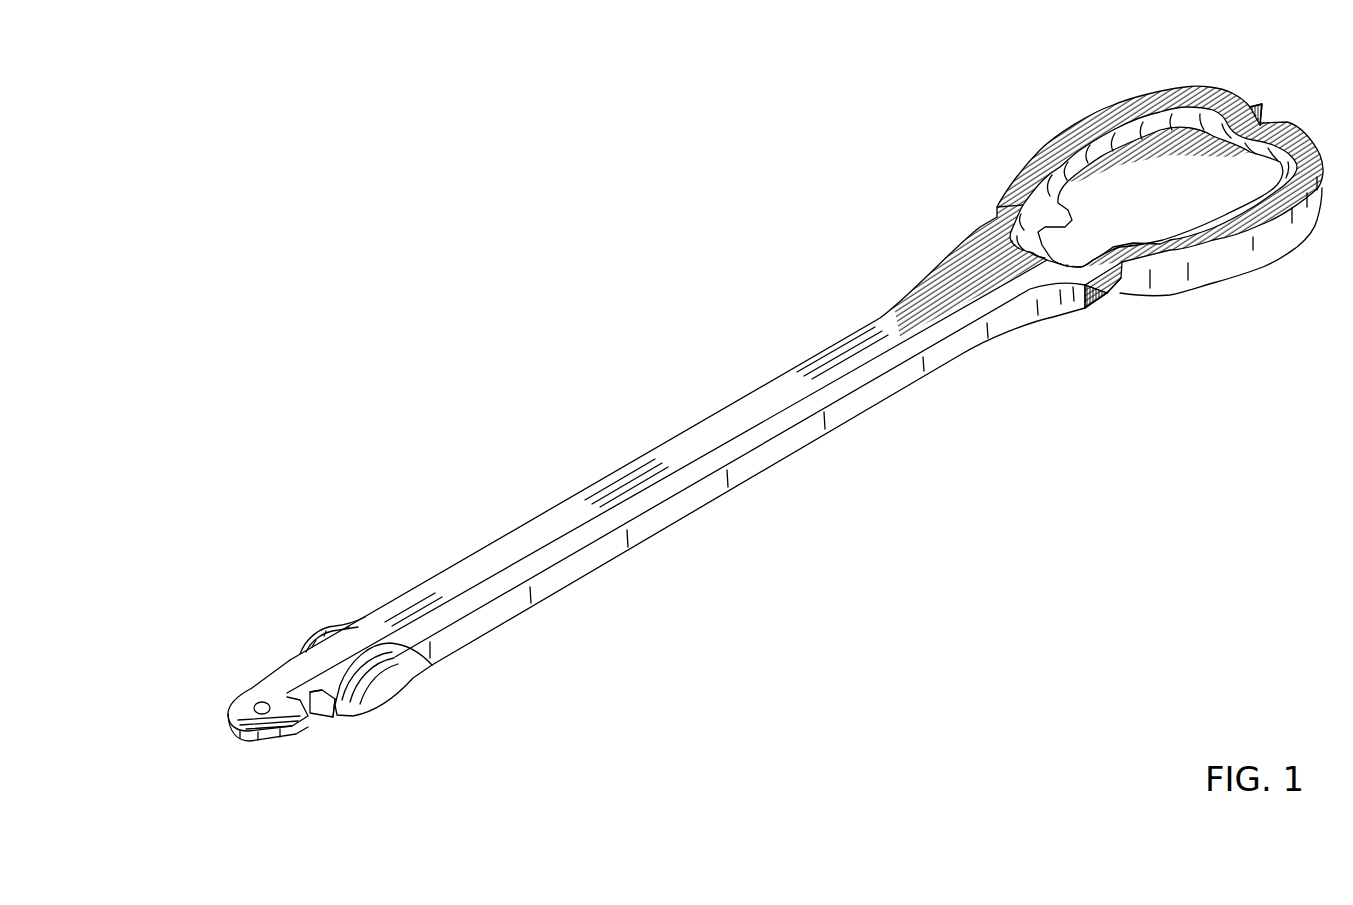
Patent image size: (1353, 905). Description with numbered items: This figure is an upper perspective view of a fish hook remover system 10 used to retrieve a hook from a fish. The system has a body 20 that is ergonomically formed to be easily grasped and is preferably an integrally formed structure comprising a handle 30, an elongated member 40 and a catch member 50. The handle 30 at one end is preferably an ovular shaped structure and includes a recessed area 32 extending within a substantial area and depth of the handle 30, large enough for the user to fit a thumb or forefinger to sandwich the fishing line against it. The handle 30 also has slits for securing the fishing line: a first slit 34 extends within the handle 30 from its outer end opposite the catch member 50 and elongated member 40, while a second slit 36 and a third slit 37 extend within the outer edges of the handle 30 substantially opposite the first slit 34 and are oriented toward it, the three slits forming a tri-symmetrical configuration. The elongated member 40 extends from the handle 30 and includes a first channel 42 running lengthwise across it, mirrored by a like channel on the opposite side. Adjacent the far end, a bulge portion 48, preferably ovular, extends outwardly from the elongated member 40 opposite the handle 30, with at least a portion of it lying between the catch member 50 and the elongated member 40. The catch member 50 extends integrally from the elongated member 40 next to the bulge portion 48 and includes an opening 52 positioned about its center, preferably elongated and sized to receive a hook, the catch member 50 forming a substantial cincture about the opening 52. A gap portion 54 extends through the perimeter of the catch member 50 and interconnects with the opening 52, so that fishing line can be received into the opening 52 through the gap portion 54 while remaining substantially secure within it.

The fish hook remover system 10 is at (342, 125).
The body 20 is at (687, 516).
The handle 30 is at (1207, 268).
The recessed area 32 is at (1097, 193).
The first slit 34 is at (1263, 125).
The second slit 36 is at (997, 215).
The third slit 37 is at (1110, 297).
The elongated member 40 is at (852, 404).
The first channel 42 is at (527, 550).
The bulge portion 48 is at (397, 683).
The catch member 50 is at (265, 733).
The opening 52 is at (261, 703).
The gap portion 54 is at (320, 717).